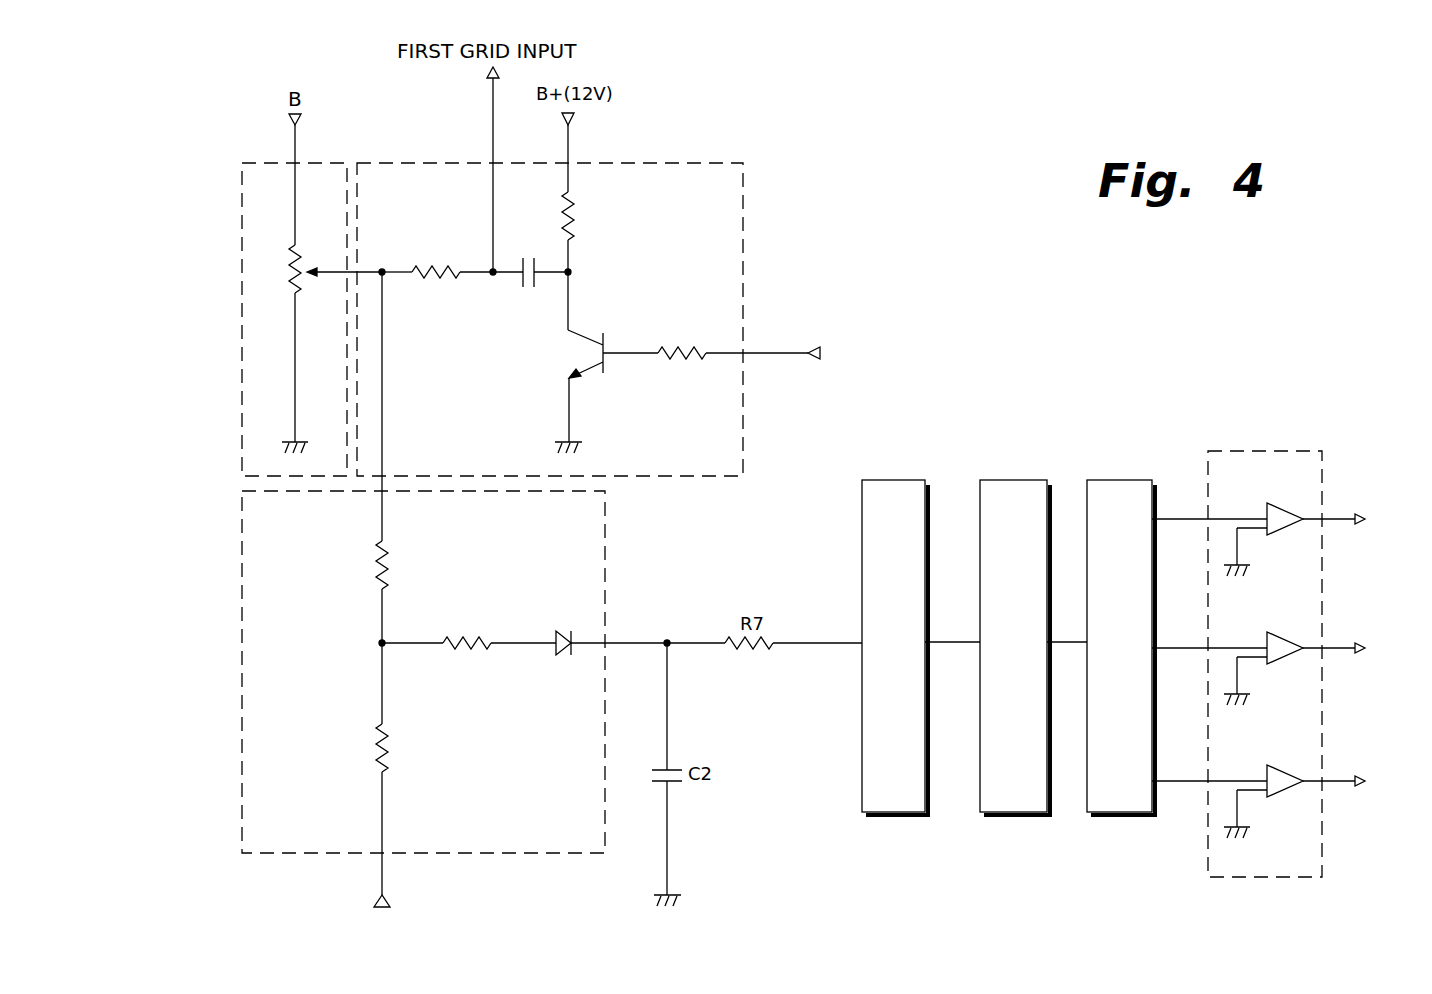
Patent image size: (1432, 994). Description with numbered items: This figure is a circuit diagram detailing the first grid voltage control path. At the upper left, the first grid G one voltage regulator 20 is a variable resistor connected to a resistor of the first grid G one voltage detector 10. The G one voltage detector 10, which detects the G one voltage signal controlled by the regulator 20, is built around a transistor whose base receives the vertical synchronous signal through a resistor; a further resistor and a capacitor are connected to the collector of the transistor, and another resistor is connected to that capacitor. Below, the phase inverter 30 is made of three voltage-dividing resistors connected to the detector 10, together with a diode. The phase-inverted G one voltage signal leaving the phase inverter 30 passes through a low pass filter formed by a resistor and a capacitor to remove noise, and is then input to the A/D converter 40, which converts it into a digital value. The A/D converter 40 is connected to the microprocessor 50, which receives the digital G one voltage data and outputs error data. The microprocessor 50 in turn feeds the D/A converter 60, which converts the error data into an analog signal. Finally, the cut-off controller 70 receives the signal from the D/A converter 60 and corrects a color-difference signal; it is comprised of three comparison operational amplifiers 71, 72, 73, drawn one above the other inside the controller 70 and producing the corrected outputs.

The first grid G1 voltage detector 10 is at (743, 198).
The first grid G1 voltage regulator 20 is at (242, 258).
The phase inverter 30 is at (242, 585).
The A/D converter 40 is at (897, 480).
The microprocessor 50 is at (1013, 480).
The D/A converter 60 is at (1118, 480).
The cut-off controller 70 is at (1253, 451).
The comparison operational amplifier 71 is at (1281, 550).
The comparison operational amplifier 72 is at (1282, 679).
The comparison operational amplifier 73 is at (1282, 811).